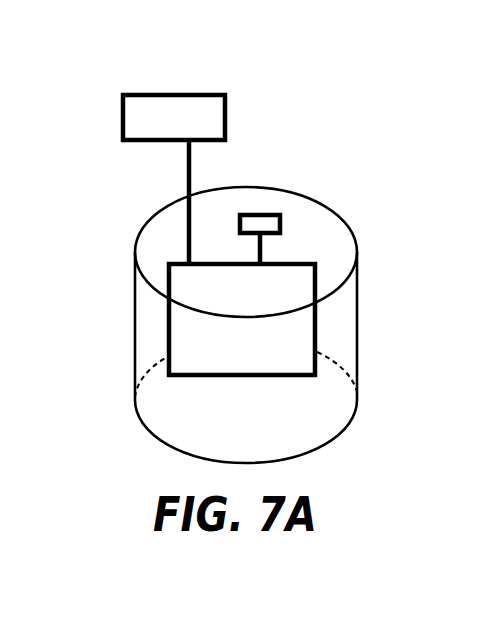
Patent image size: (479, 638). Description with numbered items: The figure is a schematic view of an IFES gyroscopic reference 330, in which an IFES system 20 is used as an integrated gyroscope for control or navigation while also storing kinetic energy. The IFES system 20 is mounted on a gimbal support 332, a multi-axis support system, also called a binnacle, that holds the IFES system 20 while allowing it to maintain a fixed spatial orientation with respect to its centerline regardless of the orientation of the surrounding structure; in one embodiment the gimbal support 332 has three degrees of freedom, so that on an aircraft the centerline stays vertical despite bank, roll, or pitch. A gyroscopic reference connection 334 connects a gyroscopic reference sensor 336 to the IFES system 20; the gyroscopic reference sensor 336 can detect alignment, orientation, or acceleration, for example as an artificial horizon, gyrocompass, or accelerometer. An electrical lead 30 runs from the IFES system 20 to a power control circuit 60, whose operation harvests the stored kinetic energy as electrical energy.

The IFES system 20 is at (317, 280).
The electrical lead 30 is at (186, 172).
The power control circuit 60 is at (227, 113).
The IFES gyroscopic reference 330 is at (98, 382).
The gimbal support 332 is at (357, 320).
The gyroscopic reference connection 334 is at (263, 248).
The gyroscopic reference sensor 336 is at (265, 214).